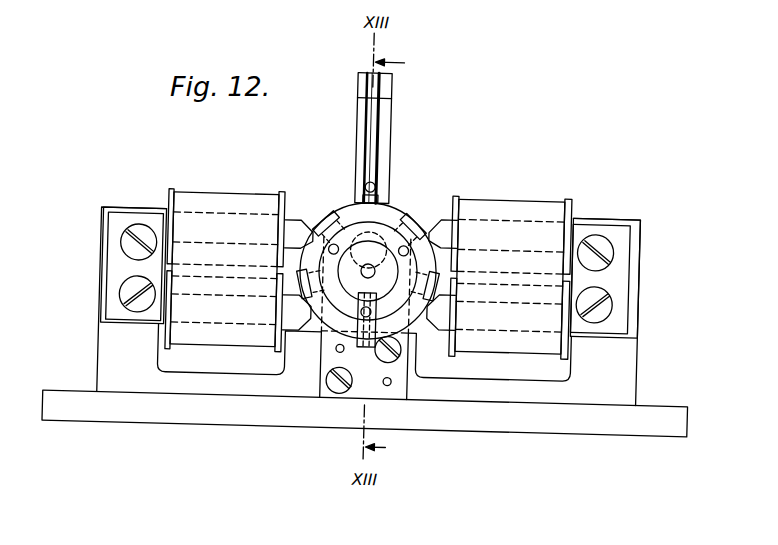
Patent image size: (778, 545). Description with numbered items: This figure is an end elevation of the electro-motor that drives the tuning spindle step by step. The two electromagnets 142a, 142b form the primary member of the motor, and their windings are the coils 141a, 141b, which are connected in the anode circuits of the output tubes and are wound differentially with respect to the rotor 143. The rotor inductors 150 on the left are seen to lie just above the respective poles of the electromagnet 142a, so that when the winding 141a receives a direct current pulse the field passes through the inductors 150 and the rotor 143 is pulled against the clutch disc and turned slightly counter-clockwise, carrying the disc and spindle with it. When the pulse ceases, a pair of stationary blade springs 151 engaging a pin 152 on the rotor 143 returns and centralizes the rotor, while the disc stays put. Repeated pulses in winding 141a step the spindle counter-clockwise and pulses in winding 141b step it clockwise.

The winding 141a is at (185, 206).
The winding 141b is at (501, 206).
The electromagnet 142a is at (290, 230).
The electromagnet 142b is at (442, 235).
The rotor 143 is at (405, 212).
The rotor inductors 150 is at (291, 247).
The stationary blade springs 151 is at (364, 125).
The pin 152 is at (356, 200).